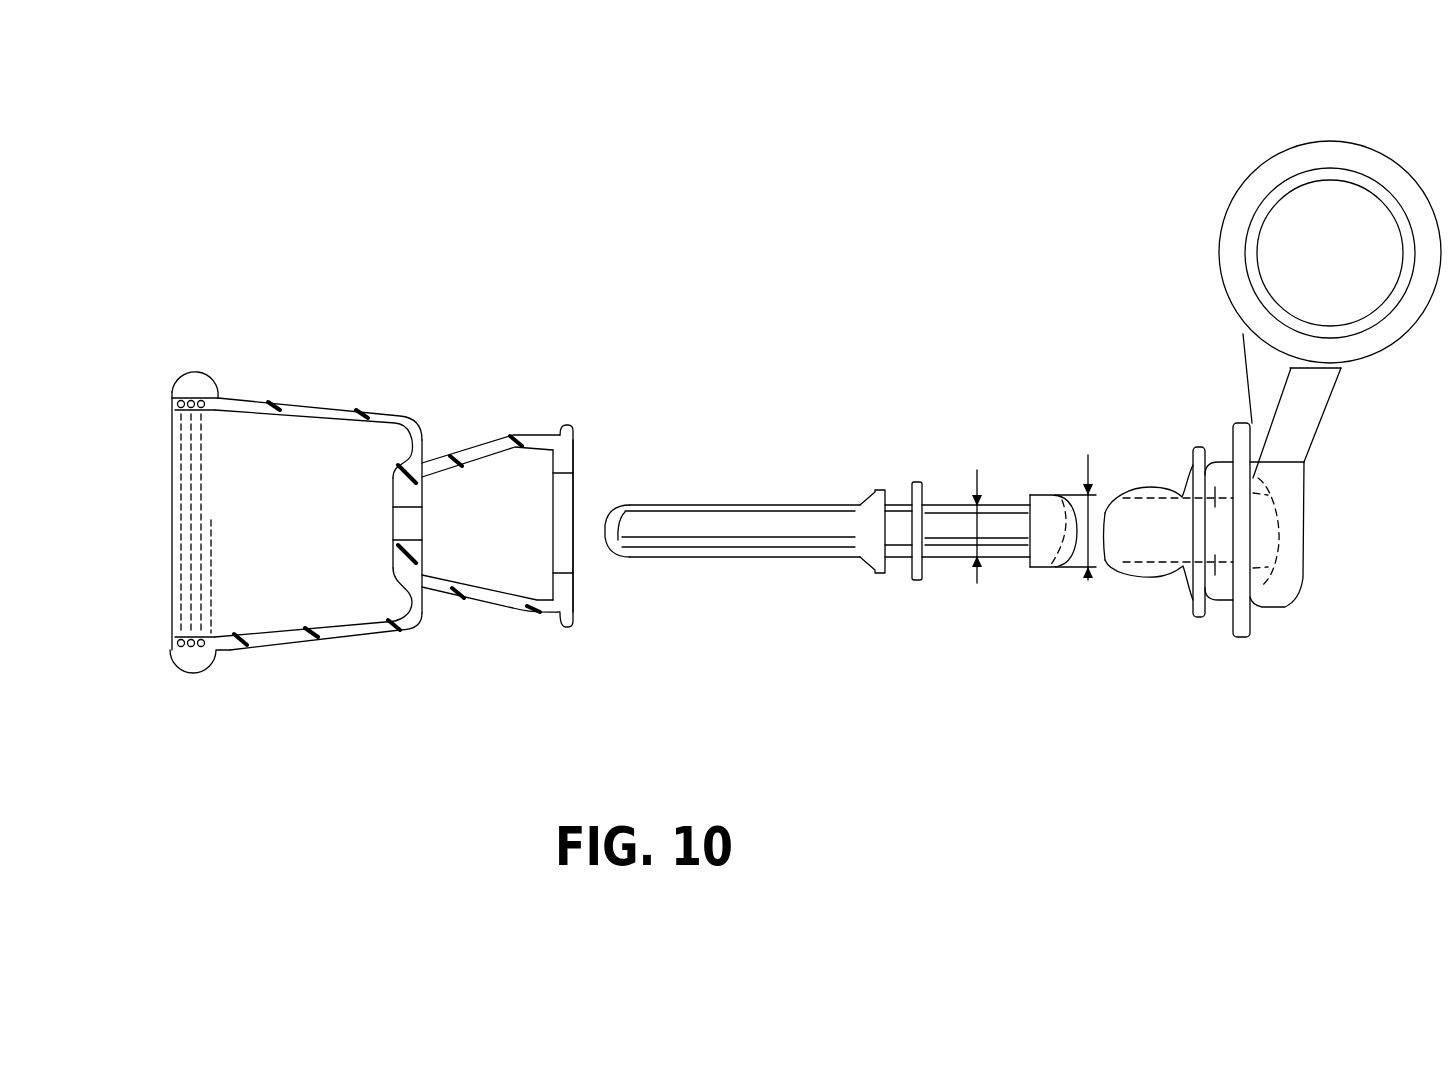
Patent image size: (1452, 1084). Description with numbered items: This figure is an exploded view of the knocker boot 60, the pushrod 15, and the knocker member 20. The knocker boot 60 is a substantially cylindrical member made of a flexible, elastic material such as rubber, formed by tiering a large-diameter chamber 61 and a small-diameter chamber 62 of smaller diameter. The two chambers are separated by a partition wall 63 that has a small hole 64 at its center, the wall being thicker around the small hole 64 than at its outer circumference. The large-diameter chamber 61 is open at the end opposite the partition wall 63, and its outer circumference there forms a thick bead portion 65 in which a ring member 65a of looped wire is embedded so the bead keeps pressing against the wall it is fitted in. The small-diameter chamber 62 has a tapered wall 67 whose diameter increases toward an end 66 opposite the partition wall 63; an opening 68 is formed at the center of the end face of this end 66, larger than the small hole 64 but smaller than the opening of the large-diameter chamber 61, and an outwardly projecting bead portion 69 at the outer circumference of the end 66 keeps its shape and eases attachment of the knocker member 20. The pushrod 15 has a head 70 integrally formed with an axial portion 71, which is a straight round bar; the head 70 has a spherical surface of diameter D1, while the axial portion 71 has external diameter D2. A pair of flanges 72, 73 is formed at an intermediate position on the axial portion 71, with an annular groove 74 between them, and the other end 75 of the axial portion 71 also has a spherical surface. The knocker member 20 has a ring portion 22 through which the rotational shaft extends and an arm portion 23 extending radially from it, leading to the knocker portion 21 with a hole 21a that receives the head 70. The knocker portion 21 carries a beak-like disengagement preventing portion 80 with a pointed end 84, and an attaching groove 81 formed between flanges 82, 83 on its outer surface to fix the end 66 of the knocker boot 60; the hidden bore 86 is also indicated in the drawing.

The pushrod 15 is at (761, 496).
The knocker member 20 is at (1178, 284).
The knocker portion 21 is at (1310, 565).
The hole 21a is at (1305, 493).
The ring portion 22 is at (1240, 227).
The arm portion 23 is at (1316, 412).
The knocker boot 60 is at (325, 384).
The large-diameter chamber 61 is at (297, 402).
The small-diameter chamber 62 is at (533, 432).
The partition wall 63 is at (392, 483).
The small hole 64 is at (395, 527).
The bead portion 65 is at (195, 376).
The ring member 65a is at (172, 393).
The end 66 is at (577, 445).
The tapered wall 67 is at (460, 600).
The opening 68 is at (568, 533).
The bead portion 69 is at (570, 427).
The head 70 is at (1050, 566).
The axial portion 71 is at (947, 507).
The flange 72 is at (867, 570).
The flange 73 is at (922, 573).
The annular groove 74 is at (895, 565).
The other end 75 is at (612, 530).
The disengagement preventing portion 80 is at (1138, 540).
The attaching groove 81 is at (1215, 613).
The flange 82 is at (1250, 638).
The flange 83 is at (1193, 610).
The end 84 is at (1108, 565).
The bore 86 is at (1178, 485).
The diameter of the spherical surface D1 is at (1076, 500).
The external diameter of the axial portion D2 is at (980, 501).